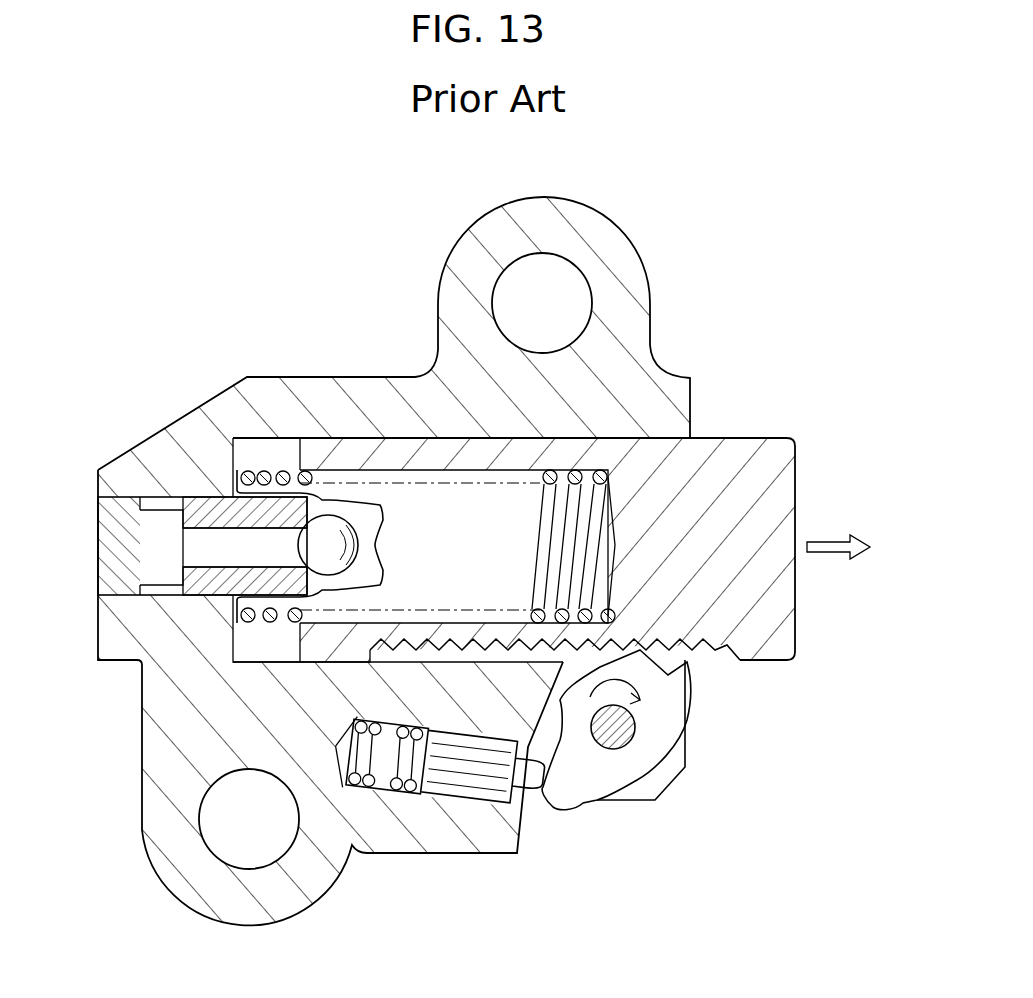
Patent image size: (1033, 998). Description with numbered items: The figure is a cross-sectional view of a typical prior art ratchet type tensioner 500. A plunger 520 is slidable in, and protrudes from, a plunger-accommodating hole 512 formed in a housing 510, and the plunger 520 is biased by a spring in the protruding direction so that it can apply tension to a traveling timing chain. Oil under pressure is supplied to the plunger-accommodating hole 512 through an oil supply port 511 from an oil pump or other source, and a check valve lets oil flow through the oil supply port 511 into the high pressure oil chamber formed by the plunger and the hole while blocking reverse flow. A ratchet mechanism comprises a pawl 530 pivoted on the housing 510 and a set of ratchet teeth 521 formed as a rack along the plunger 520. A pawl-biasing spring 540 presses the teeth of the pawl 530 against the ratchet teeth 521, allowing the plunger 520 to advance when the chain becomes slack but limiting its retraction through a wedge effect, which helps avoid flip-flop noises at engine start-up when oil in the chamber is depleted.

The tensioner 500 is at (265, 207).
The housing 510 is at (640, 365).
The oil supply port 511 is at (150, 598).
The plunger-accommodating hole 512 is at (253, 445).
The plunger 520 is at (770, 445).
The ratchet teeth 521 is at (720, 648).
The pawl 530 is at (673, 703).
The pawl-biasing spring 540 is at (406, 792).